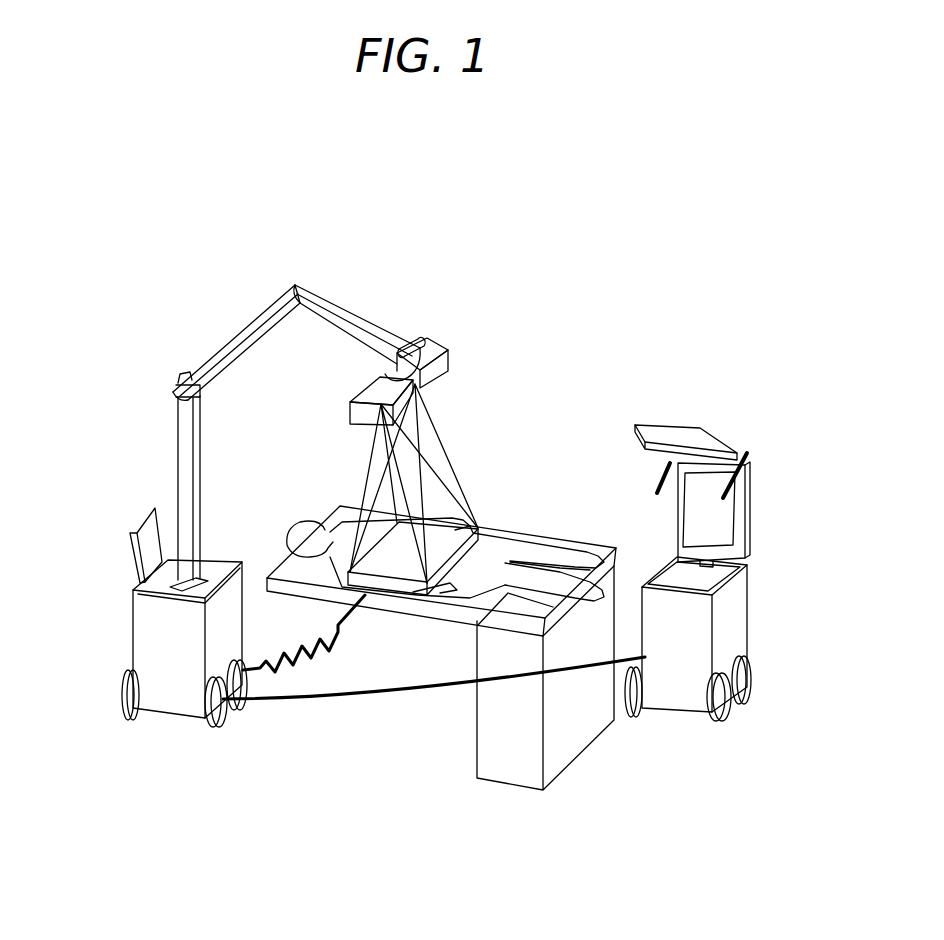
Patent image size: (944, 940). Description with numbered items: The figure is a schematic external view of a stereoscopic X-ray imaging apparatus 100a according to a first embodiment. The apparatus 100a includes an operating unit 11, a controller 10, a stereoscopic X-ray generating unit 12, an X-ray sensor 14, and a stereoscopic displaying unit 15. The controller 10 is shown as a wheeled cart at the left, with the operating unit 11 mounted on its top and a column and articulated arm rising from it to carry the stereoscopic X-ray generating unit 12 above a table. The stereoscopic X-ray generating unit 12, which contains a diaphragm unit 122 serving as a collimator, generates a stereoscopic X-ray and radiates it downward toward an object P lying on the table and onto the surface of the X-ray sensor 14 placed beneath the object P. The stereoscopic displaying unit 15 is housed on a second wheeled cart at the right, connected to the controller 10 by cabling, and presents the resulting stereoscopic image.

The controller 10 is at (132, 640).
The operating unit 11 is at (130, 523).
The stereoscopic X-ray generating unit 12 is at (413, 340).
The diaphragm unit 122 is at (443, 363).
The X-ray sensor 14 is at (397, 598).
The stereoscopic displaying unit 15 is at (740, 523).
The object P is at (490, 548).
The stereoscopic X-ray imaging apparatus 100a is at (868, 754).